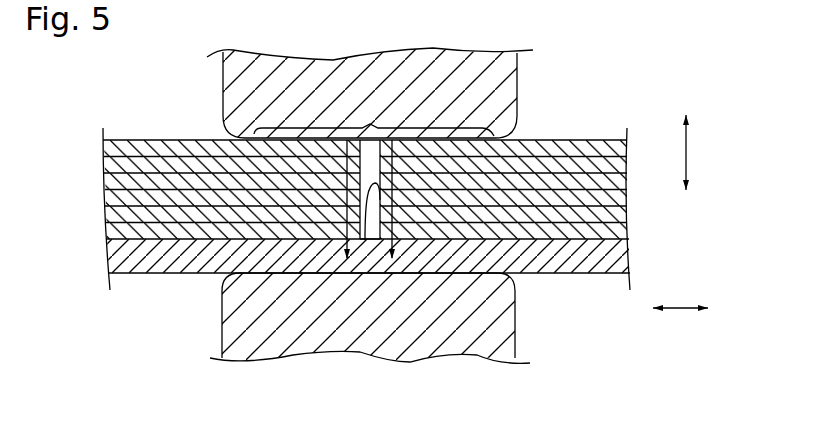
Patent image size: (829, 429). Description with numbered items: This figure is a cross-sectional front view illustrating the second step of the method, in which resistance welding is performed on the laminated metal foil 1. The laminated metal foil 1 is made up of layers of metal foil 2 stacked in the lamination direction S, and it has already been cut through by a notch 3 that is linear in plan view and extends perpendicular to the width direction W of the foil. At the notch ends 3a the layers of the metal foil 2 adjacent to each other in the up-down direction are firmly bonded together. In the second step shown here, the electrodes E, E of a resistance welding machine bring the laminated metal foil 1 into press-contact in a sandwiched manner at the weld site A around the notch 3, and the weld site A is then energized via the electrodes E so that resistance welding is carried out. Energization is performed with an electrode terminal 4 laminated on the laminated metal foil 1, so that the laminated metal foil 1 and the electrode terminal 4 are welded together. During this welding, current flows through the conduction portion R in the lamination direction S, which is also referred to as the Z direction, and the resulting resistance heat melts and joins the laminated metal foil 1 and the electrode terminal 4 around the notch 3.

The laminated metal foil 1 is at (183, 135).
The metal foil 2 is at (581, 160).
The notch 3 is at (370, 157).
The notch ends 3a is at (365, 240).
The electrode terminal 4 is at (577, 262).
The weld site A is at (374, 117).
The electrodes E is at (500, 84).
The conduction portion R is at (378, 255).
The lamination direction S is at (692, 151).
The width direction W is at (677, 305).
The Z direction Z is at (360, 196).